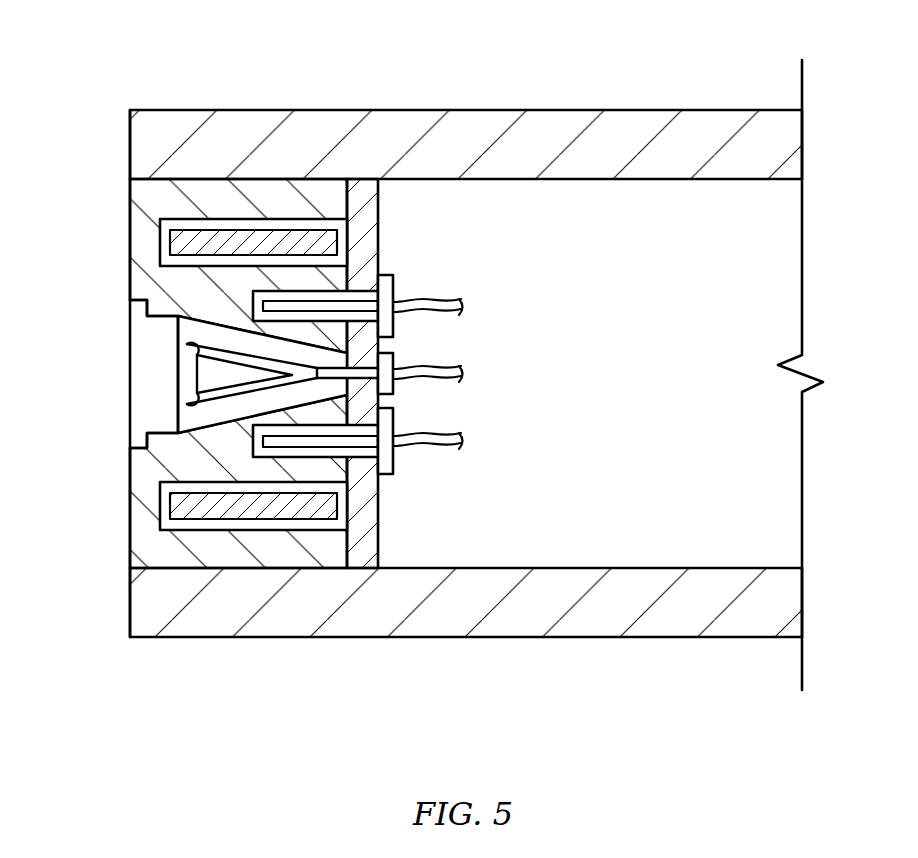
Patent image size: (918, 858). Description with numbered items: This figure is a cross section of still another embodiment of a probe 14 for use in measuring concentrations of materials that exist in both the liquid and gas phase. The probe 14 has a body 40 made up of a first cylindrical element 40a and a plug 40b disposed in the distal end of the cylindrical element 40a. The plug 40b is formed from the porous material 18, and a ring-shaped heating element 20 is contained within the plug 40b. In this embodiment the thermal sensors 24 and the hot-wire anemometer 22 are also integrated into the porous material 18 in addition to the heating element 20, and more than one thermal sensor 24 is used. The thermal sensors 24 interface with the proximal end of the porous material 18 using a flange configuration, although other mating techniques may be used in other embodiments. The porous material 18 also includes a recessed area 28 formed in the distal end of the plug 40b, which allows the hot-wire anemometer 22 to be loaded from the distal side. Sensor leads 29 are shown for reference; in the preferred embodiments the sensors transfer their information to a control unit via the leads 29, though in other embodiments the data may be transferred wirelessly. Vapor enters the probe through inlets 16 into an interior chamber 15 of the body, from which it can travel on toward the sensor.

The probe 14 is at (482, 60).
The interior chamber 15 is at (652, 230).
The inlets 16 is at (148, 562).
The porous material 18 is at (130, 222).
The heating element 20 is at (263, 228).
The hot-wire anemometer 22 is at (397, 358).
The thermal sensors 24 is at (397, 285).
The recessed area 28 is at (150, 372).
The sensor leads 29 is at (443, 447).
The body 40 is at (358, 639).
The first cylindrical element 40a is at (592, 619).
The plug 40b is at (130, 502).